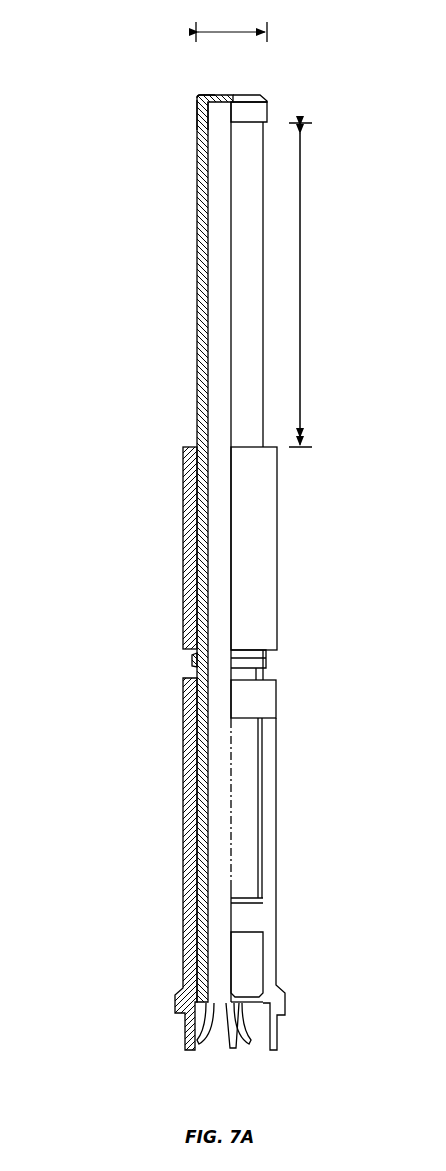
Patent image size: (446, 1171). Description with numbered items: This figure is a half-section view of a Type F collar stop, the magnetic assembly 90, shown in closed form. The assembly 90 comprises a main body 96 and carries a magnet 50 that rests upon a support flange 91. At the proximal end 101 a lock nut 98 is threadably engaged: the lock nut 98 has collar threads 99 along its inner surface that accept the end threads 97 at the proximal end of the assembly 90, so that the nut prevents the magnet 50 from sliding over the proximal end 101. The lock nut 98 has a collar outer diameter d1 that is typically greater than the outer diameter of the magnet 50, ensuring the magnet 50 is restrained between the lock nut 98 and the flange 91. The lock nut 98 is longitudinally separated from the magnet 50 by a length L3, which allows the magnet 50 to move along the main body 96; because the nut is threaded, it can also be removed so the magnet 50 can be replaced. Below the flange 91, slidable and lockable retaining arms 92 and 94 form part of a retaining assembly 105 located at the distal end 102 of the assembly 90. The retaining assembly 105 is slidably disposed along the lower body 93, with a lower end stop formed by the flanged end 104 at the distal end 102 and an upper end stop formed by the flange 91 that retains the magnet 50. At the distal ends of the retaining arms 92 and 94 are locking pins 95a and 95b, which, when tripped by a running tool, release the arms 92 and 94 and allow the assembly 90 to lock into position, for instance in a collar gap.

The magnetic assembly 90 is at (108, 37).
The main body 96 is at (197, 308).
The end threads 97 is at (199, 108).
The collar threads 99 is at (217, 96).
The proximal end 101 is at (250, 96).
The lock nut 98 is at (268, 112).
The magnet 50 is at (279, 560).
The support flange 91 is at (268, 656).
The retaining assembly 105 is at (275, 700).
The lower body 93 is at (247, 793).
The retaining arm 92 is at (277, 850).
The flanged end 104 is at (258, 965).
The retaining arm 94 is at (186, 790).
The locking pin 95a is at (252, 1042).
The locking pin 95b is at (205, 1042).
The distal end 102 is at (232, 1048).
The collar outer diameter d1 is at (231, 21).
The length L3 is at (309, 285).